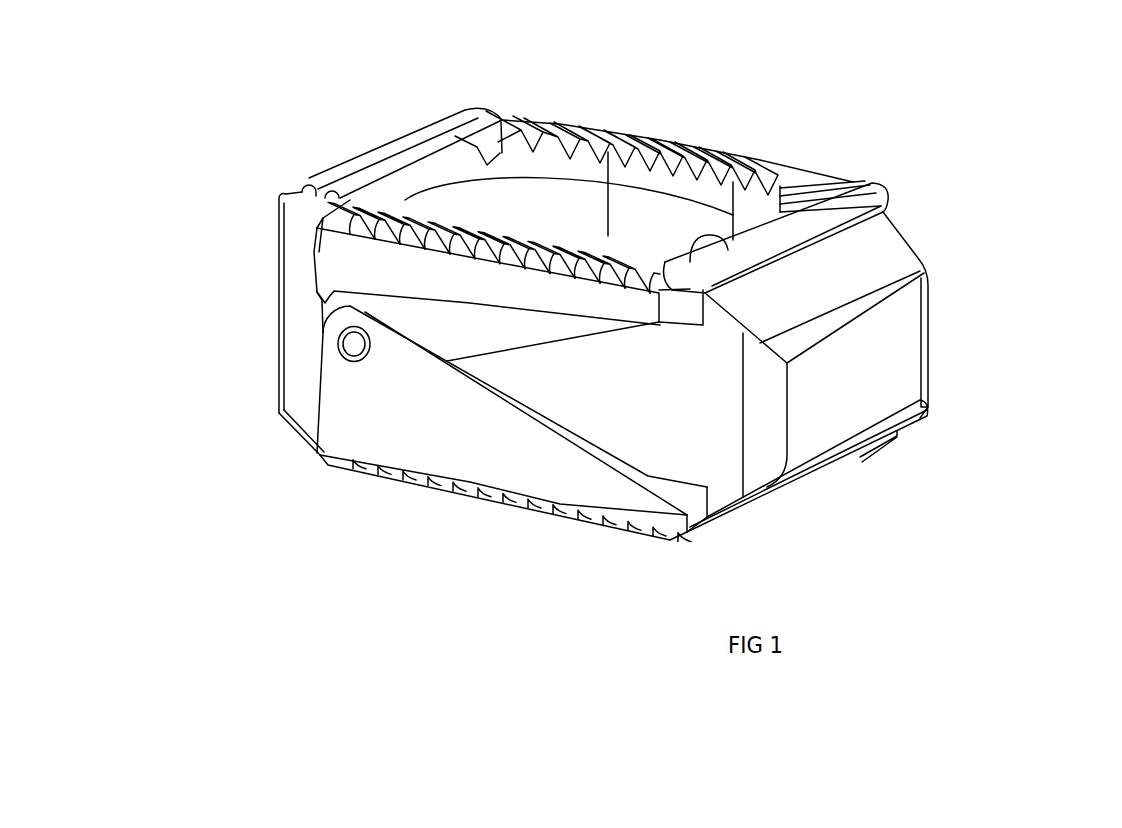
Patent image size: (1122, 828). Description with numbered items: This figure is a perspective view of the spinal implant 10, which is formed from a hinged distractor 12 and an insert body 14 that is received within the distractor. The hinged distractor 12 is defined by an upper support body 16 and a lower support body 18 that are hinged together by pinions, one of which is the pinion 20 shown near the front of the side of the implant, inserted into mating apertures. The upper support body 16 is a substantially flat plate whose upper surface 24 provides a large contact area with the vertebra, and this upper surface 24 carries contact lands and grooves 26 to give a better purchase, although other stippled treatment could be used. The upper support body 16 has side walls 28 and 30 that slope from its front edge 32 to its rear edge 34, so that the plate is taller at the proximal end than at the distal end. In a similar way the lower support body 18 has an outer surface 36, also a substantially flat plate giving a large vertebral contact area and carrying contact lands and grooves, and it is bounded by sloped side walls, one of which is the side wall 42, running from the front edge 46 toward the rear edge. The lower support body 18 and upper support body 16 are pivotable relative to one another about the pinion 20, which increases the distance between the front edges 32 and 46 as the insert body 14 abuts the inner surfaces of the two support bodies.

The implant 10 is at (617, 372).
The hinged distractor 12 is at (573, 527).
The insert body 14 is at (930, 330).
The upper support body 16 is at (333, 268).
The lower support body 18 is at (305, 440).
The pinion 20 is at (340, 350).
The upper surface 24 is at (713, 155).
The contact lands and grooves 26 is at (612, 133).
The side wall 28 is at (527, 296).
The side wall 30 is at (884, 190).
The front edge 32 is at (683, 303).
The rear edge 34 is at (297, 232).
The outer surface 36 is at (865, 452).
The side wall 42 is at (428, 443).
The front edge 46 is at (703, 527).